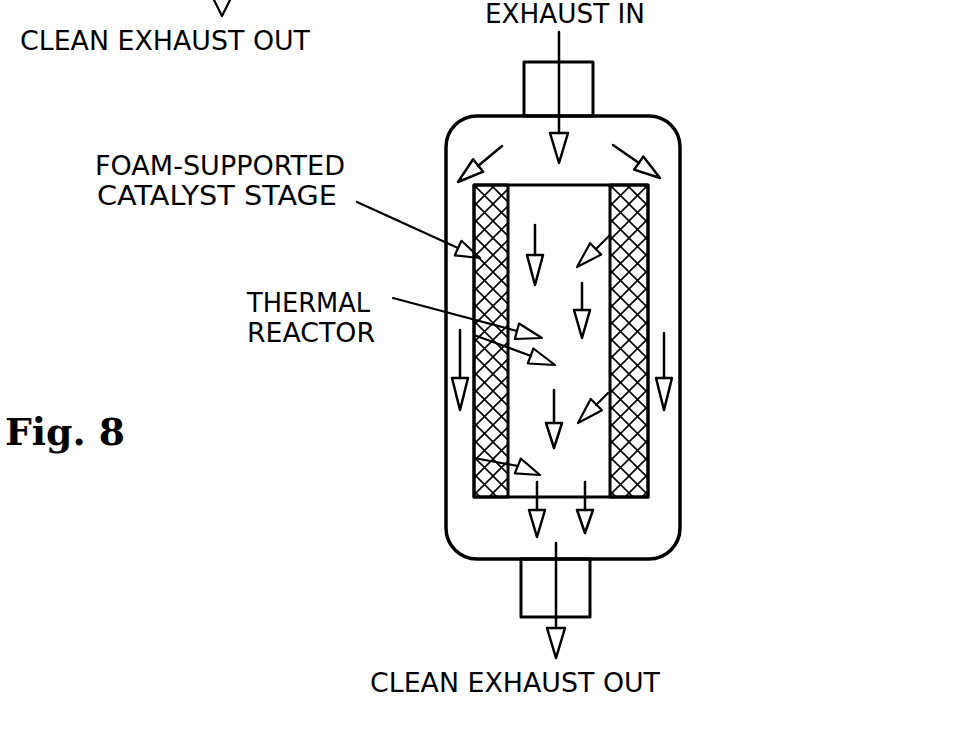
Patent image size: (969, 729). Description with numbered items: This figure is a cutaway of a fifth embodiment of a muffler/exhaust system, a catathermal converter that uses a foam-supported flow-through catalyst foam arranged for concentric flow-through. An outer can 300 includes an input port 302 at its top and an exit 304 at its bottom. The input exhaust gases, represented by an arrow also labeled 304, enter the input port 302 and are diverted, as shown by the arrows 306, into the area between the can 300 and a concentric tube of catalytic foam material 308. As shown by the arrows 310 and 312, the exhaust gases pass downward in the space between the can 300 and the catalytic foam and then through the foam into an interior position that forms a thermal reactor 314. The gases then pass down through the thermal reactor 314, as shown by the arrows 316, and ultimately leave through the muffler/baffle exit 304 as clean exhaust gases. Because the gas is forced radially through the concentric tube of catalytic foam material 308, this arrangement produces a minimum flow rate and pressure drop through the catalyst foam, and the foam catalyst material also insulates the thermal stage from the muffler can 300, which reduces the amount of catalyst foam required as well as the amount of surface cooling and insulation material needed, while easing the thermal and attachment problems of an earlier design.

The outer can 300 is at (446, 275).
The input port 302 is at (593, 92).
The exit 304 is at (557, 85).
The arrows 306 is at (748, 147).
The concentric tube of catalytic foam material 308 is at (557, 590).
The arrows 310 is at (460, 352).
The arrows 312 is at (543, 262).
The thermal reactor 314 is at (520, 478).
The arrows 316 is at (588, 310).